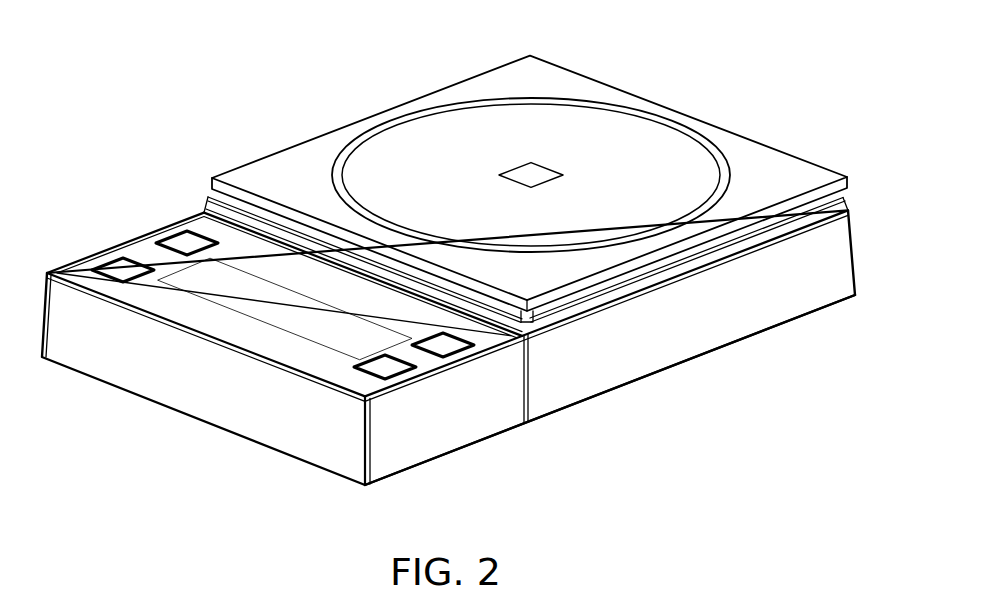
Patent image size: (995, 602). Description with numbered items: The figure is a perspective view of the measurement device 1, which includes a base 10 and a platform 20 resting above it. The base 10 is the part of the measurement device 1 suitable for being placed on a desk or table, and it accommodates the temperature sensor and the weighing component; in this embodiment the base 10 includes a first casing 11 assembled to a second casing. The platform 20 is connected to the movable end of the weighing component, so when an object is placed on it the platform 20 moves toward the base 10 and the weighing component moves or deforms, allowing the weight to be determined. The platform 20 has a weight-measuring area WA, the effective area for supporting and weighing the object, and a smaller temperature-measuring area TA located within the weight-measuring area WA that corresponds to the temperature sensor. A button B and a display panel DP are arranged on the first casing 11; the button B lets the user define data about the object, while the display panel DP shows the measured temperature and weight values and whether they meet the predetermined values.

The measurement device 1 is at (198, 43).
The base 10 is at (617, 382).
The first casing 11 is at (703, 317).
The platform 20 is at (529, 174).
The weight-measuring area WA is at (628, 147).
The temperature-measuring area TA is at (525, 167).
The display panel DP is at (273, 300).
The button B is at (393, 373).